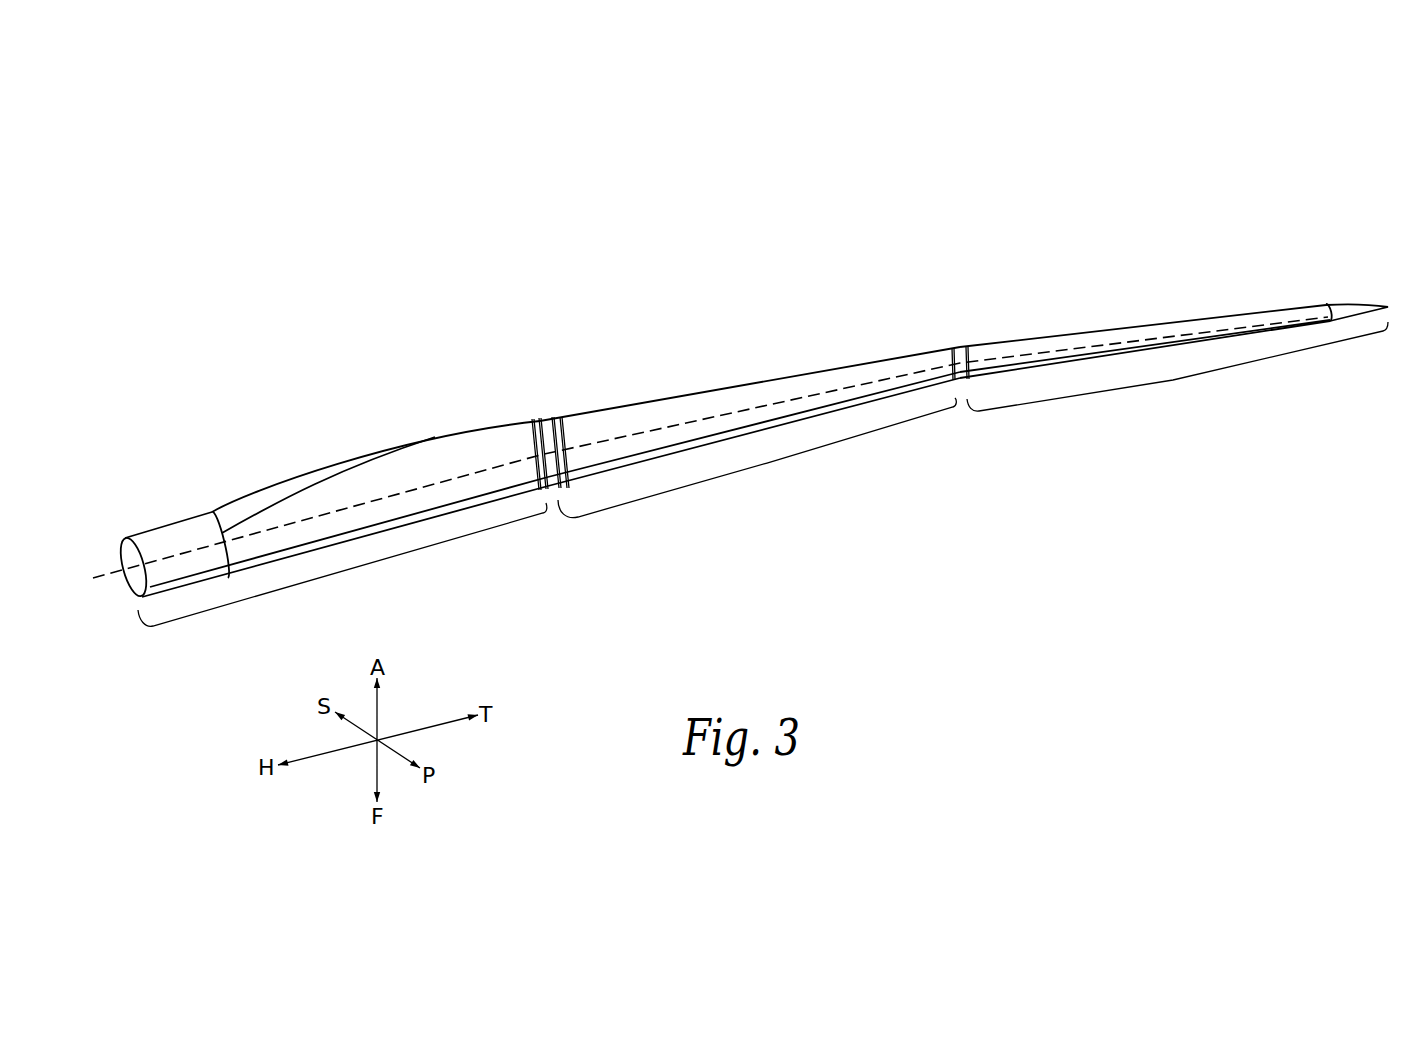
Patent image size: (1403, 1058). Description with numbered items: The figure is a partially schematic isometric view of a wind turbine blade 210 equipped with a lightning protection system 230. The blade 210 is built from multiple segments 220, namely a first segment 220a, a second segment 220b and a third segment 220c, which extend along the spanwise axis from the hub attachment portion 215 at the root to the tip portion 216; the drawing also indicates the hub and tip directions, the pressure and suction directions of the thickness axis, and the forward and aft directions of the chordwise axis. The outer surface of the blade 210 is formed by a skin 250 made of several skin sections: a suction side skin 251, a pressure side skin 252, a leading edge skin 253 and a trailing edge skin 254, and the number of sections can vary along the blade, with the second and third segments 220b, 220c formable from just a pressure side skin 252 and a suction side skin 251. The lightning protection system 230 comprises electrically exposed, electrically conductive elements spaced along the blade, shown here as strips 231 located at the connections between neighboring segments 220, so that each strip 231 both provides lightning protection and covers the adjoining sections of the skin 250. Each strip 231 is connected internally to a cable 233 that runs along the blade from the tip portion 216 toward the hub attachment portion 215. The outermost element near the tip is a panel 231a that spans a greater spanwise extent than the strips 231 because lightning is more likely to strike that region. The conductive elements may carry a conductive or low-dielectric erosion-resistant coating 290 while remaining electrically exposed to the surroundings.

The blade 210 is at (762, 220).
The hub attachment portion 215 is at (152, 540).
The tip portion 216 is at (1303, 305).
The segments 220 is at (355, 332).
The first segment 220a is at (340, 578).
The second segment 220b is at (767, 463).
The third segment 220c is at (1173, 380).
The lightning protection system 230 is at (996, 284).
The strips 231 is at (561, 456).
The panel 231a is at (1343, 309).
The cable 233 is at (93, 579).
The skin 250 is at (367, 476).
The suction side skin 251 is at (290, 506).
The pressure side skin 252 is at (432, 478).
The leading edge skin 253 is at (467, 515).
The trailing edge skin 254 is at (228, 507).
The erosion-resistant coating 290 is at (562, 411).